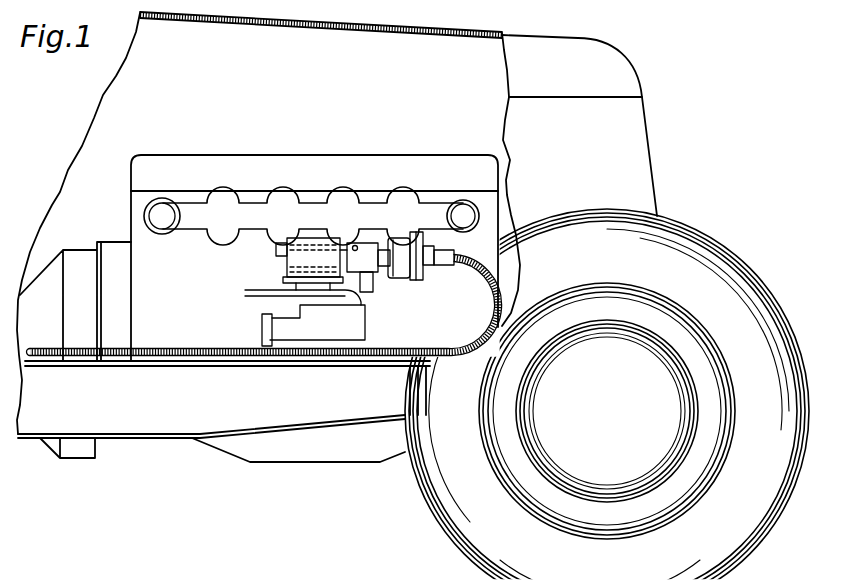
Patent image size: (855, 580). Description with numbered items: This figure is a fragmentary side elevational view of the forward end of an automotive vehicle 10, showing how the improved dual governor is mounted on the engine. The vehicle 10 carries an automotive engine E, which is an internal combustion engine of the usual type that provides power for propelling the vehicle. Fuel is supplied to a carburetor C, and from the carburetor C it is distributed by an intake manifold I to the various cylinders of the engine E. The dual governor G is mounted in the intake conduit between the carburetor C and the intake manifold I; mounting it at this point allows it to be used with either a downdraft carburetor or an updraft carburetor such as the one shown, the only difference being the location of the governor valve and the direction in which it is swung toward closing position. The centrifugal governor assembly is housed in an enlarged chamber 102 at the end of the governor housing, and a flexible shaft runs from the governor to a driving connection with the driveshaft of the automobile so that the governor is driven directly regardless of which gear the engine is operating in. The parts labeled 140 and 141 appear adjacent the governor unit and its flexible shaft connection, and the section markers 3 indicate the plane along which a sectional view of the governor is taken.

The vehicle 10 is at (142, 428).
The automotive engine E is at (170, 165).
The intake manifold I is at (270, 213).
The dual governor G is at (316, 262).
The control valve 140 is at (364, 258).
The enlarged chamber 102 is at (398, 276).
The flexible conduit fitting 141 is at (467, 264).
The carburetor C is at (320, 333).
The section line 3- 3 is at (283, 258).